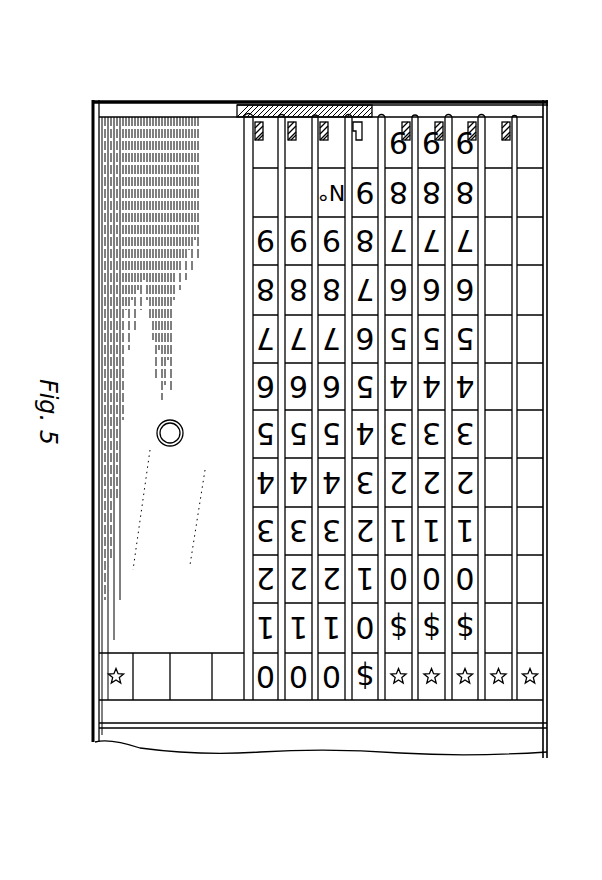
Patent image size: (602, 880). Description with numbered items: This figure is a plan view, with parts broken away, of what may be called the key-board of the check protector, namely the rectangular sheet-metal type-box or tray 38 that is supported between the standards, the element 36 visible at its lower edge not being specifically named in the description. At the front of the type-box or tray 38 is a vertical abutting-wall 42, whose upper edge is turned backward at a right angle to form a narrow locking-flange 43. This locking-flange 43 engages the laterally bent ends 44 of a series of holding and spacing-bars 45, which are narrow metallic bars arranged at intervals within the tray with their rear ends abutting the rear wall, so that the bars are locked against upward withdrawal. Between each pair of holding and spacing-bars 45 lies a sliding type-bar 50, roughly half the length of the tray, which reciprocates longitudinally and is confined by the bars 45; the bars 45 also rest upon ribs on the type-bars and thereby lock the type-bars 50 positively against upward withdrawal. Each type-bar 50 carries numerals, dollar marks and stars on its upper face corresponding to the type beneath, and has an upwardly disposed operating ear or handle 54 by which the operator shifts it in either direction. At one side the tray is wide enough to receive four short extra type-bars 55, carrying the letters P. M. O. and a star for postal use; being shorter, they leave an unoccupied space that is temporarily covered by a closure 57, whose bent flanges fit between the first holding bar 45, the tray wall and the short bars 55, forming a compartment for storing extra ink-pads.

The bottom wall of housing 36 is at (323, 712).
The type-box or tray 38 is at (545, 327).
The front abutting-wall 42 is at (333, 102).
The locking-flange 43 is at (447, 108).
The laterally bent ends 44 is at (300, 120).
The holding and spacing-bars 45 is at (283, 145).
The sliding type-bar 50 is at (472, 566).
The operating ear or handle 54 is at (403, 120).
The short extra type-bars 55 is at (105, 678).
The closure 57 is at (108, 545).